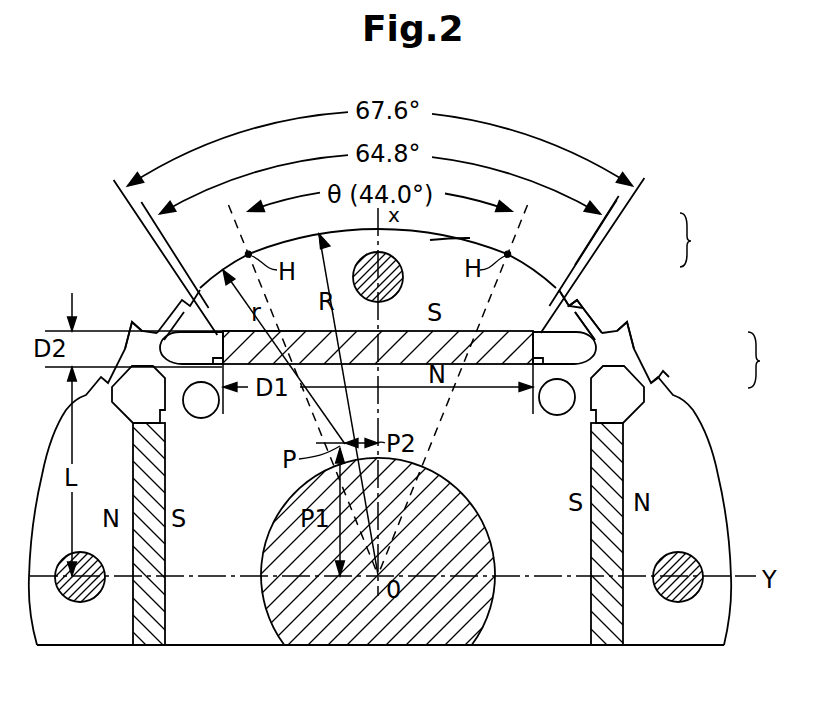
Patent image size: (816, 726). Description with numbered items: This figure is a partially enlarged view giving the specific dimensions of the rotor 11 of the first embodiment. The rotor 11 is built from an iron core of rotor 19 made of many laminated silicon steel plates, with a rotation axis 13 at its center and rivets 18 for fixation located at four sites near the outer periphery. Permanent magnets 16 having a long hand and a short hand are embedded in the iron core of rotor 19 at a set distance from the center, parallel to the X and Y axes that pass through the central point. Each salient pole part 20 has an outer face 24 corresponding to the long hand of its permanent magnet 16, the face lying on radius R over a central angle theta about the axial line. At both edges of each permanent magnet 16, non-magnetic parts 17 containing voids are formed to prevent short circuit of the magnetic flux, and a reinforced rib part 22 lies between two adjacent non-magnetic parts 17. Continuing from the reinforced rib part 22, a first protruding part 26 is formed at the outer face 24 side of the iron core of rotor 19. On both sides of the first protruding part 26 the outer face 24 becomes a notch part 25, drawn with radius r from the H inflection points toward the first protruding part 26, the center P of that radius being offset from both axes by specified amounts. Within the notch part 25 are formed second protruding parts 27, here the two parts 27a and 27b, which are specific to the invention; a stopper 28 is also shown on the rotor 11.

The rotor 11 is at (715, 613).
The rotation axis 13 is at (470, 547).
The permanent magnet 16 is at (420, 364).
The non-magnetic part 17 is at (560, 328).
The rivet 18 is at (401, 276).
The iron core of rotor 19 is at (549, 630).
The salient pole part 20 is at (300, 238).
The reinforced rib part 22 is at (568, 380).
The outer face 24 is at (452, 236).
The notch part 25 is at (630, 327).
The first protruding part 26 is at (134, 328).
The second protruding part 27 is at (736, 300).
The second protruding part 27a is at (578, 272).
The second protruding part 27b is at (581, 296).
The stopper 28 is at (206, 418).